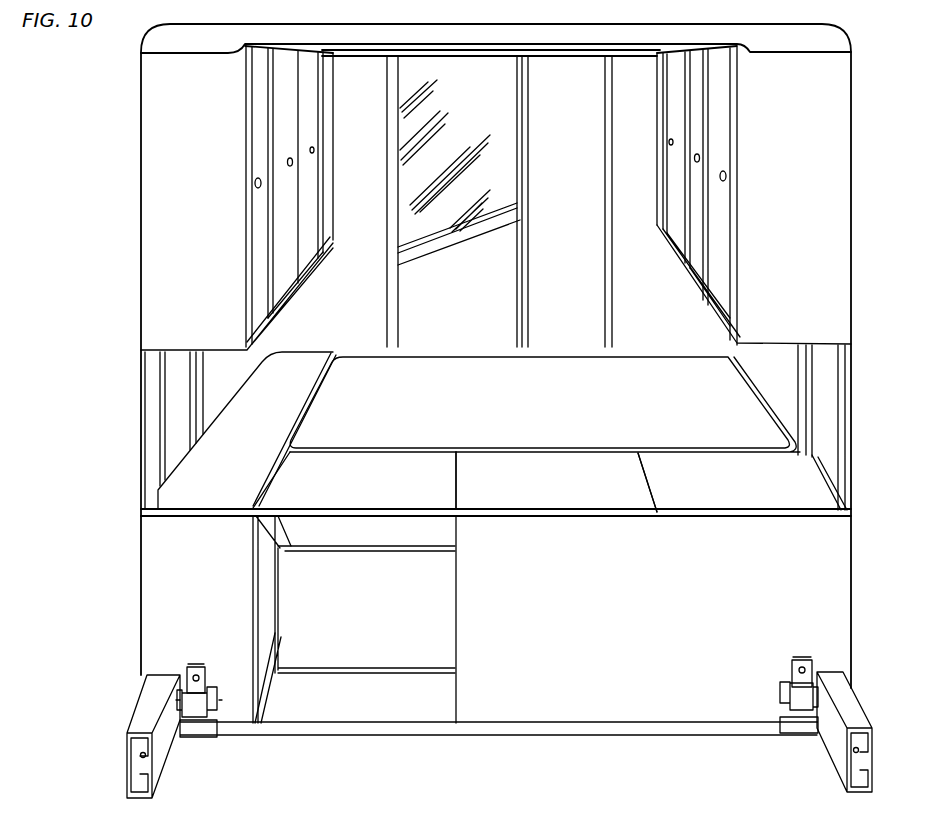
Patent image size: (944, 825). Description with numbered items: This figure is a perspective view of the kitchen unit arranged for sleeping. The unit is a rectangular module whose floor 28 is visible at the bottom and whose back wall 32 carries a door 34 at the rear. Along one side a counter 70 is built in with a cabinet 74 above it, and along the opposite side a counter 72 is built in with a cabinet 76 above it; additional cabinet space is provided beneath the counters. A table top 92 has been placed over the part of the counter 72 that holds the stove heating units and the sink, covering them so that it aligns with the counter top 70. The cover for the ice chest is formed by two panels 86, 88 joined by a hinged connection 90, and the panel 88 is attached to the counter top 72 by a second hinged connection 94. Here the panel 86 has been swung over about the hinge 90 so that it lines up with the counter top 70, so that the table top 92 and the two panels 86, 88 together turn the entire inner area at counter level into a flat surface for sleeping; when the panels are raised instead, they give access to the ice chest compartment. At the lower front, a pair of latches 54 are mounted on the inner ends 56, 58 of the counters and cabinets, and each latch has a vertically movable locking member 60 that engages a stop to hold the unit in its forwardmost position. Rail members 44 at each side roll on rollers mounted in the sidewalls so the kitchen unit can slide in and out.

The cabinet 74 is at (316, 200).
The cabinet 76 is at (672, 181).
The door 34 is at (527, 247).
The back wall 32 is at (657, 287).
The counter 70 is at (298, 356).
The table top 92 is at (520, 404).
The panel 86 is at (369, 484).
The hinged connection 90 is at (457, 479).
The panel 88 is at (563, 486).
The hinged connection 94 is at (648, 478).
The counter 72 is at (740, 484).
The inner end 56 is at (204, 599).
The inner end 58 is at (634, 614).
The locking member 60 is at (200, 672).
The latch 54 is at (214, 698).
The rail member 44 is at (143, 722).
The floor 28 is at (380, 712).